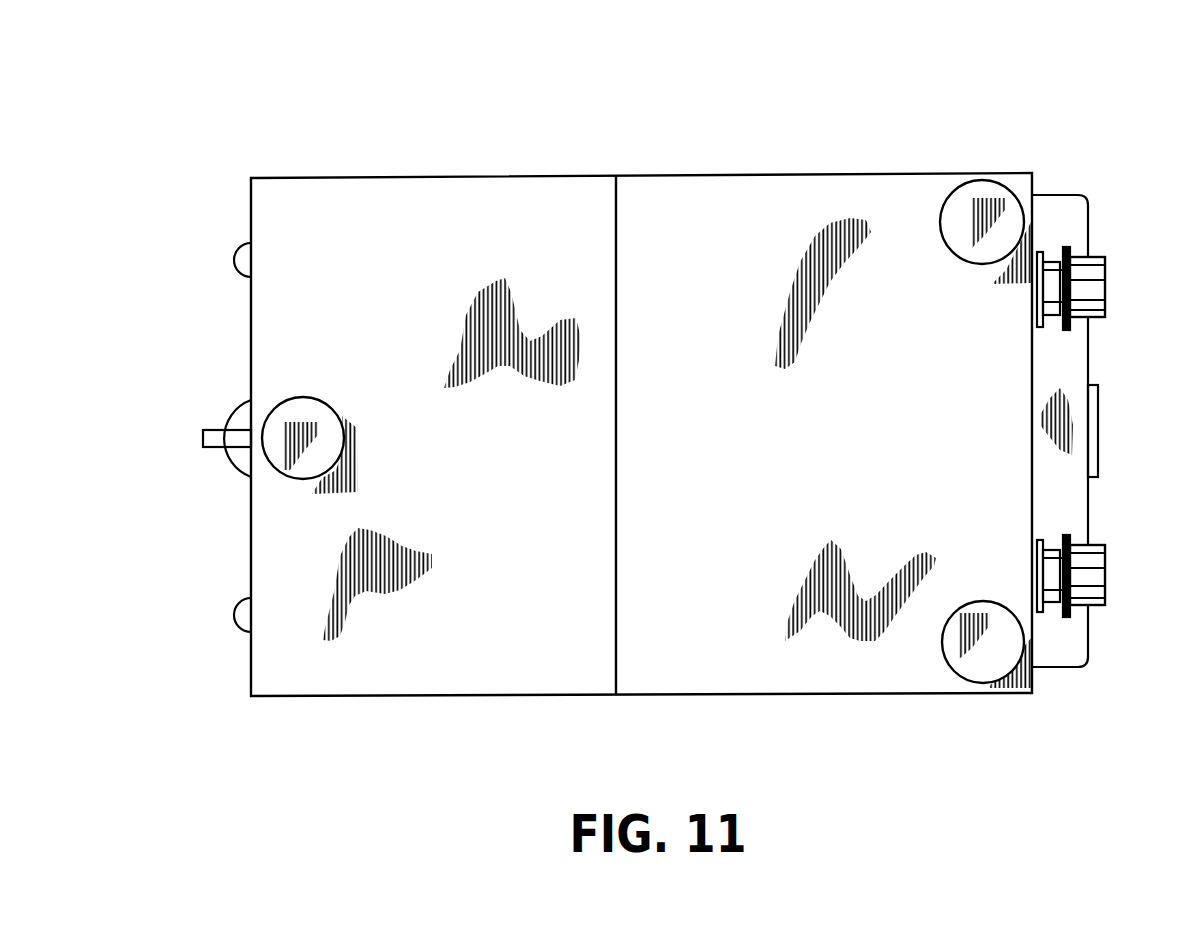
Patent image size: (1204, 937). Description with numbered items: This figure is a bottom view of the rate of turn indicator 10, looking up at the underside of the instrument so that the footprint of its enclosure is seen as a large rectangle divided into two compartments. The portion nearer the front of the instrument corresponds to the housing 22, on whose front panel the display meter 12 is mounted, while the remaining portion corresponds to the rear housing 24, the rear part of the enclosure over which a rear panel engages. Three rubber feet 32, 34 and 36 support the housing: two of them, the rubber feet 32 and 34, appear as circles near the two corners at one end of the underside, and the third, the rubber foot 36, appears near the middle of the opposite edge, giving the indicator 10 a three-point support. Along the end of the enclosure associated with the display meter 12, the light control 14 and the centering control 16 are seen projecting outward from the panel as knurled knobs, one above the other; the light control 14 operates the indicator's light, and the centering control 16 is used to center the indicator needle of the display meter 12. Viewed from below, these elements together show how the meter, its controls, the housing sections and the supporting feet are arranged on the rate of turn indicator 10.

The rate of turn indicator 10 is at (848, 84).
The display meter 12 is at (1068, 365).
The light control 14 is at (1105, 270).
The centering control 16 is at (1105, 568).
The housing 22 is at (830, 460).
The rear housing 24 is at (455, 460).
The rubber foot 32 is at (977, 192).
The rubber foot 34 is at (978, 666).
The rubber foot 36 is at (290, 412).